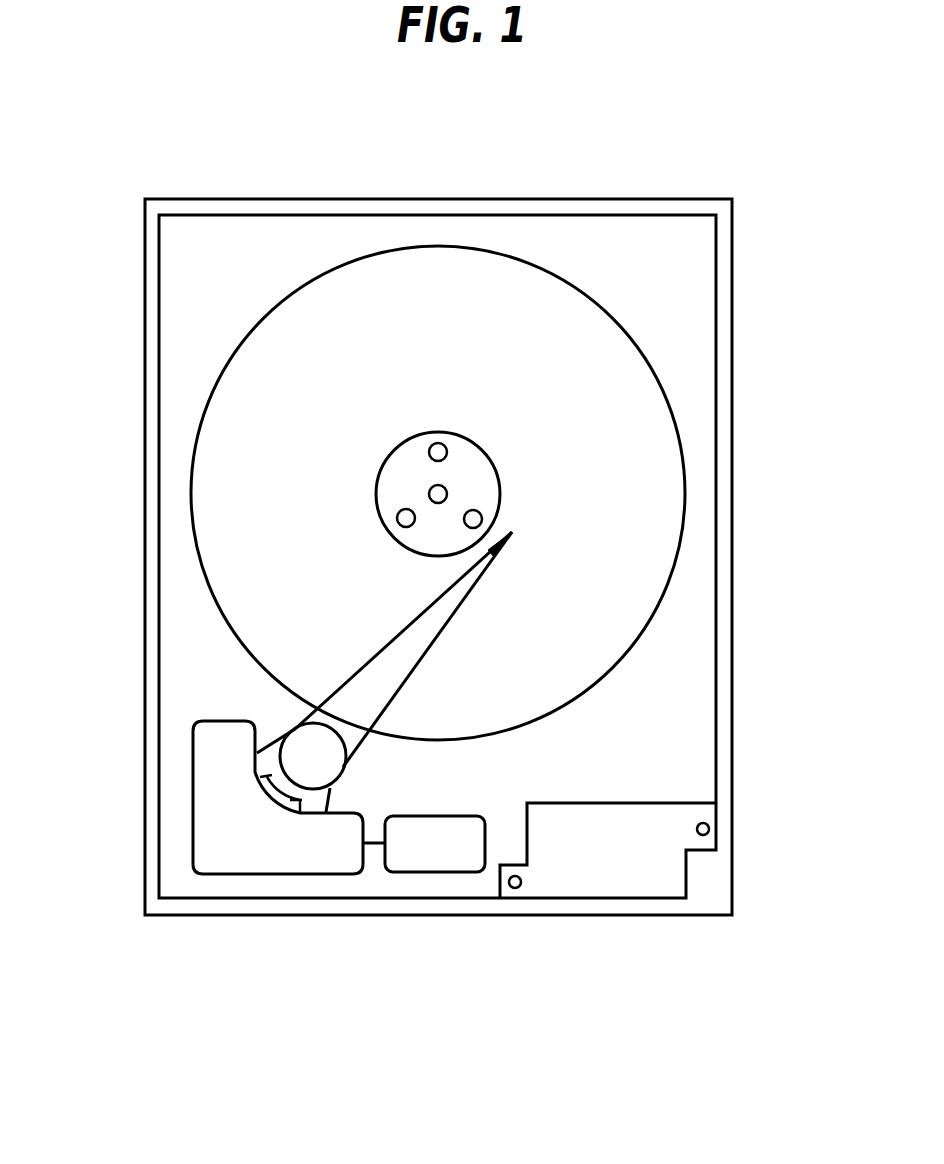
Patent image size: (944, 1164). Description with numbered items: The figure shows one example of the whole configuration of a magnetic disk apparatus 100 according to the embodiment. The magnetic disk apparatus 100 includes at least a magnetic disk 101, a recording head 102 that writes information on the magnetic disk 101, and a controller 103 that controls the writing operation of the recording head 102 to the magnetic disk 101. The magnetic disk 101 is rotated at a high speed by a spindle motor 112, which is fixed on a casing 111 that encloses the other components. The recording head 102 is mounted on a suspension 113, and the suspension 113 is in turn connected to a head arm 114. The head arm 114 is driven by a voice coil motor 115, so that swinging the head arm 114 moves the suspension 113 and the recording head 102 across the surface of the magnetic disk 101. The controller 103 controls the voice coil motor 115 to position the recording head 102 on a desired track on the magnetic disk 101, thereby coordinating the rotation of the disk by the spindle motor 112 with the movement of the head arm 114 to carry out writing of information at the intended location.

The magnetic disk apparatus 100 is at (580, 176).
The magnetic disk 101 is at (652, 407).
The recording head 102 is at (512, 532).
The controller 103 is at (437, 855).
The casing 111 is at (729, 293).
The spindle motor 112 is at (380, 493).
The suspension 113 is at (453, 583).
The head arm 114 is at (380, 665).
The voice coil motor 115 is at (270, 852).